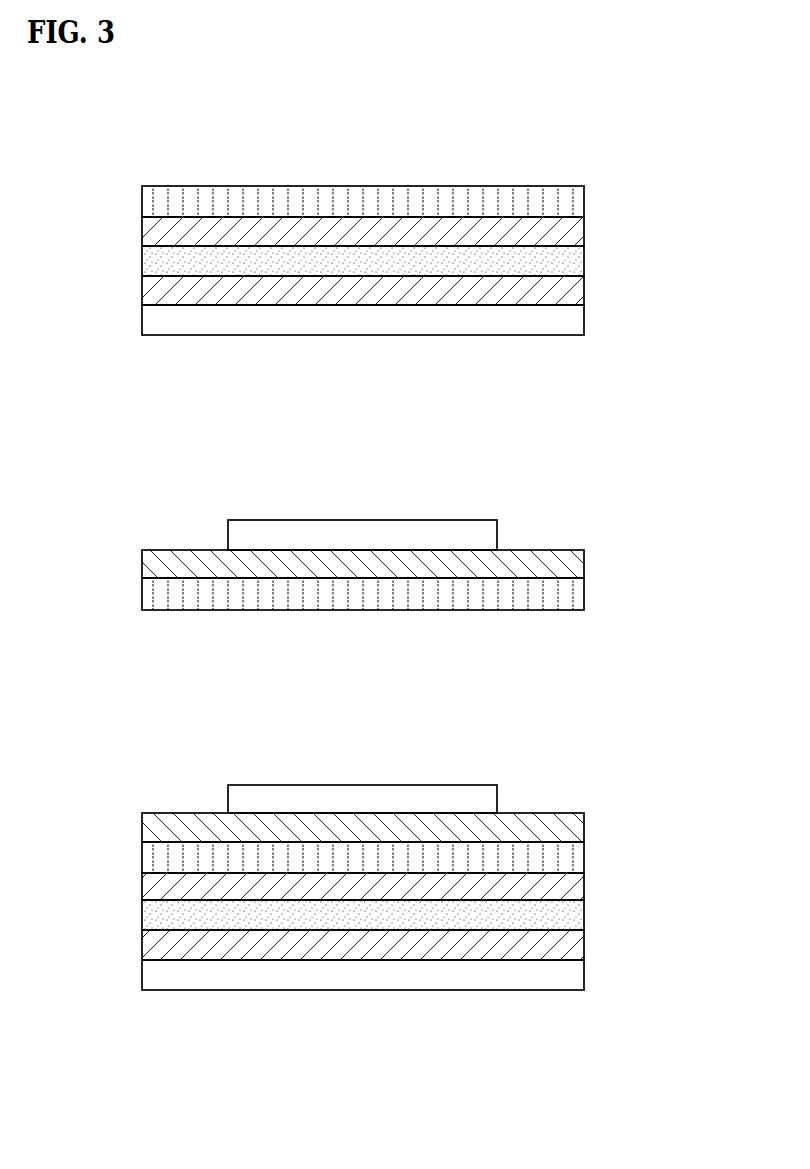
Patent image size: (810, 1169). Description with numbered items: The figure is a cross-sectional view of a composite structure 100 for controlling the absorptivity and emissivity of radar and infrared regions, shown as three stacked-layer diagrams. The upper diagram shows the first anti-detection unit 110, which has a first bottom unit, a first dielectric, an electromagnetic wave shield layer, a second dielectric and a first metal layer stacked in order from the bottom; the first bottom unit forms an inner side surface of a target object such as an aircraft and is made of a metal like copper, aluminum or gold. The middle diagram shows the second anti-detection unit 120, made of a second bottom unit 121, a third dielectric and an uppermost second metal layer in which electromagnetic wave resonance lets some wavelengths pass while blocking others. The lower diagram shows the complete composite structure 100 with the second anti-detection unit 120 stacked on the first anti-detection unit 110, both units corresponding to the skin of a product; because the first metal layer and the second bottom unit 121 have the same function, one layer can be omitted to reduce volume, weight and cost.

The composite structure 100 is at (218, 743).
The first anti-detection unit 110 is at (218, 147).
The second anti-detection unit 120 is at (218, 478).
The second bottom unit 121 is at (584, 590).